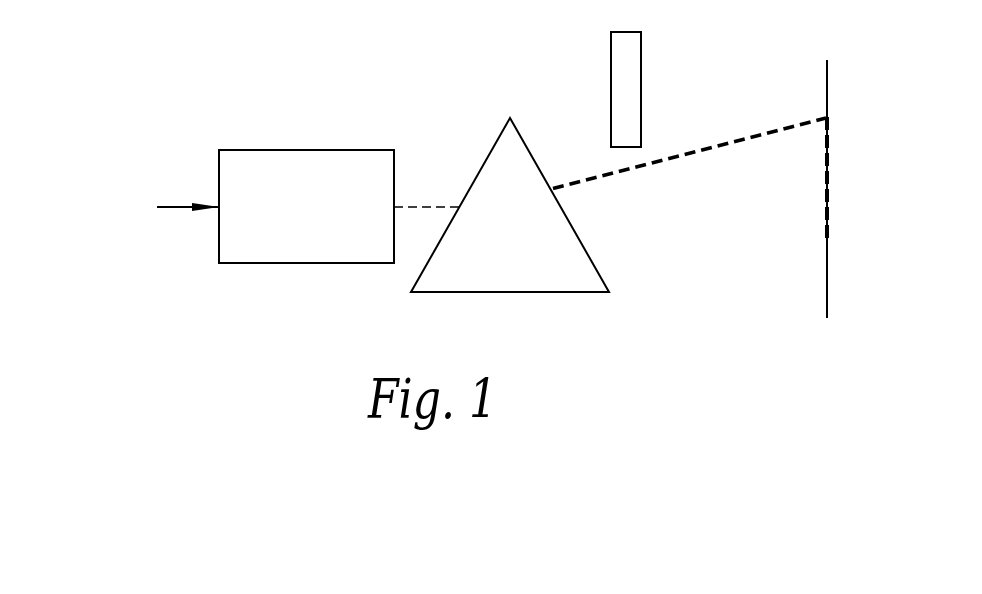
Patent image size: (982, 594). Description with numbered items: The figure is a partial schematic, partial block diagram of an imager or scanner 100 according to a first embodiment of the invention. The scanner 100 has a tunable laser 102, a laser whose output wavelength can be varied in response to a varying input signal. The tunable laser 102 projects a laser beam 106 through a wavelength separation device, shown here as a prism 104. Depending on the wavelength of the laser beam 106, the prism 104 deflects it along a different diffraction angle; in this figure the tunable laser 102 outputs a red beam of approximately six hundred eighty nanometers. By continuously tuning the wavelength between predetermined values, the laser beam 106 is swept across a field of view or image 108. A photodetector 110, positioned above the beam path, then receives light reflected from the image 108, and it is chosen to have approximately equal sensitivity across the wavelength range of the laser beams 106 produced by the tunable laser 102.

The imager or scanner 100 is at (156, 302).
The tunable laser 102 is at (324, 222).
The prism 104 is at (487, 158).
The laser beam 106 is at (786, 132).
The image 108 is at (827, 88).
The photodetector 110 is at (612, 82).